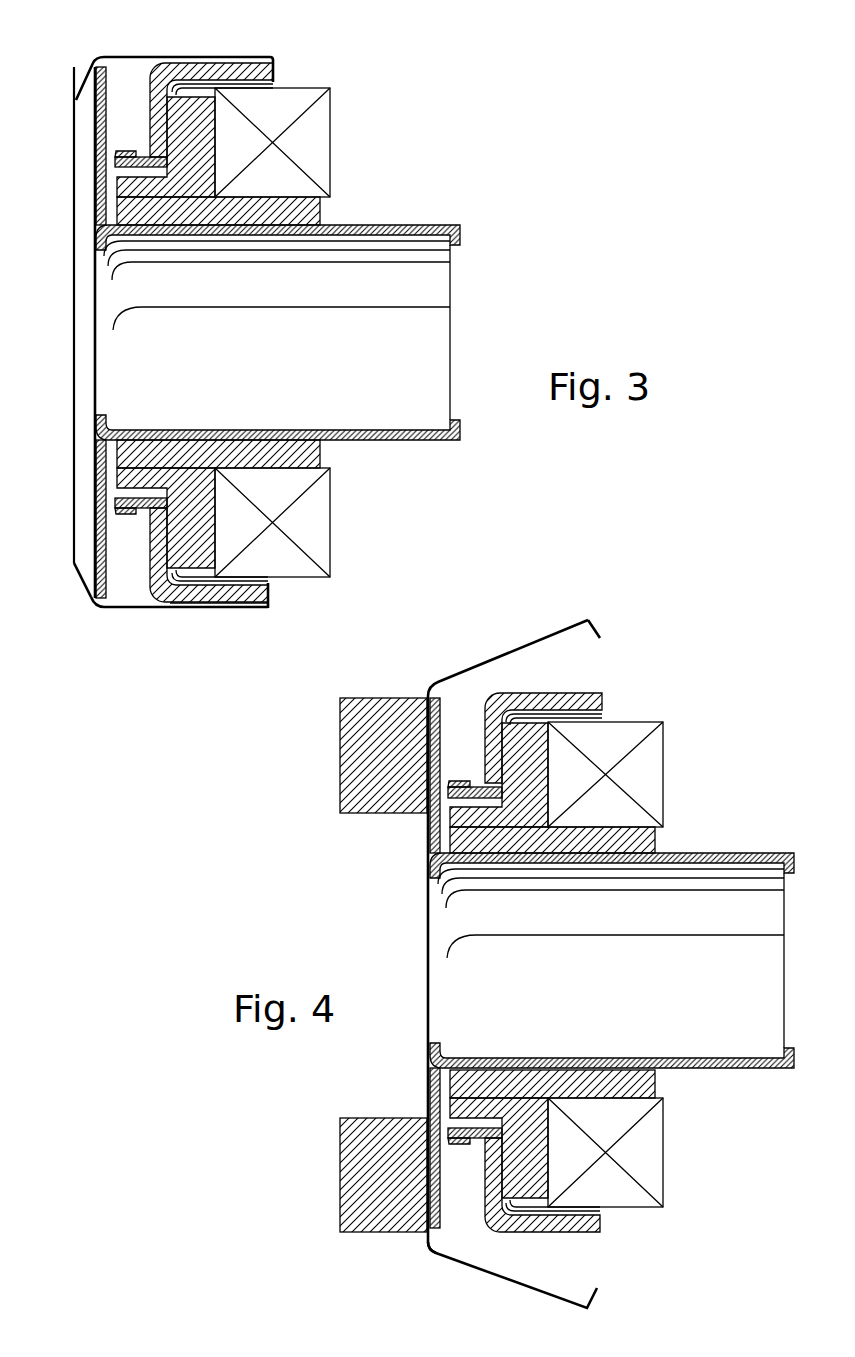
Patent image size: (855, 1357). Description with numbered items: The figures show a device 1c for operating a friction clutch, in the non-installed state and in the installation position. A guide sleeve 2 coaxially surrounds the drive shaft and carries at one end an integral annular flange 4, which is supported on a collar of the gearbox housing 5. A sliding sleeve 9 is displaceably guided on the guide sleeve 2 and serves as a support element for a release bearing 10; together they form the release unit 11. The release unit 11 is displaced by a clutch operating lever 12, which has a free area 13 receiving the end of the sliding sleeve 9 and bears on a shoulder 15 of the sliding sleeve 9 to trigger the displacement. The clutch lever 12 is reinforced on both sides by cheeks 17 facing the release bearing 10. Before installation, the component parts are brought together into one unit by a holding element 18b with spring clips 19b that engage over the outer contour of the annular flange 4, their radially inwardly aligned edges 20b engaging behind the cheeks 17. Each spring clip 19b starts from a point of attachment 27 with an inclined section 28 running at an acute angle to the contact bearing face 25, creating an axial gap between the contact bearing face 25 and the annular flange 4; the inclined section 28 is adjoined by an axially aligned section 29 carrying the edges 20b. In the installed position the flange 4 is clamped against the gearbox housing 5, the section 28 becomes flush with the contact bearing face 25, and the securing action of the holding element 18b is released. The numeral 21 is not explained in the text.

In FIG. 3, the device 1c is at (352, 118).
In FIG. 4, the device 1c is at (692, 747).
In FIG. 3, the guide sleeve 2 is at (420, 225).
In FIG. 4, the guide sleeve 2 is at (757, 851).
In FIG. 3, the annular flange 4 is at (100, 132).
In FIG. 4, the gearbox housing 5 is at (363, 1158).
In FIG. 3, the sliding sleeve 9 is at (317, 208).
In FIG. 4, the sliding sleeve 9 is at (645, 835).
In FIG. 3, the release bearing 10 is at (318, 146).
In FIG. 4, the release bearing 10 is at (650, 775).
In FIG. 3, the release unit 11 is at (362, 473).
In FIG. 4, the release unit 11 is at (702, 1102).
In FIG. 3, the clutch operating lever 12 is at (147, 95).
In FIG. 4, the clutch operating lever 12 is at (485, 725).
In FIG. 3, the free area 13 is at (148, 517).
In FIG. 4, the free area 13 is at (478, 1150).
In FIG. 3, the shoulder 15 is at (189, 553).
In FIG. 4, the shoulder 15 is at (521, 1186).
In FIG. 3, the cheeks 17 is at (243, 598).
In FIG. 3, the holding element 18b is at (80, 363).
In FIG. 4, the holding element 18b is at (432, 984).
In FIG. 3, the spring clips 19b is at (208, 610).
In FIG. 4, the spring clips 19b is at (427, 1250).
In FIG. 3, the edges 20b is at (270, 607).
In FIG. 4, the edges 20b is at (598, 623).
In FIG. 3, the clip 21 is at (113, 162).
In FIG. 3, the contact bearing face 25 is at (63, 395).
In FIG. 3, the point of attachment 27 is at (72, 563).
In FIG. 3, the inclined section 28 is at (83, 600).
In FIG. 3, the axially aligned section 29 is at (200, 57).
In FIG. 4, the axially aligned section 29 is at (533, 645).